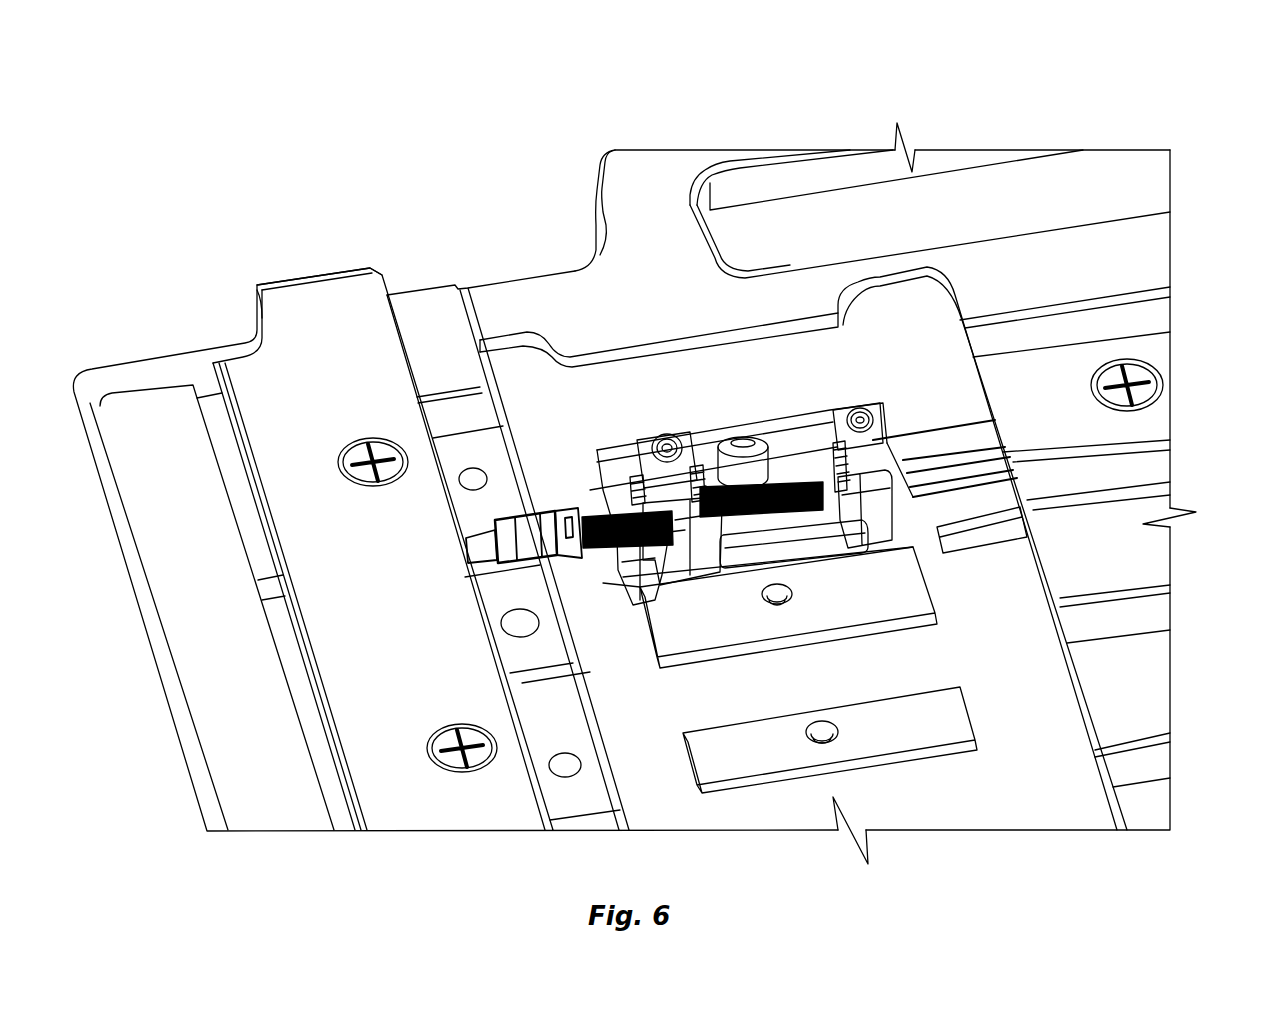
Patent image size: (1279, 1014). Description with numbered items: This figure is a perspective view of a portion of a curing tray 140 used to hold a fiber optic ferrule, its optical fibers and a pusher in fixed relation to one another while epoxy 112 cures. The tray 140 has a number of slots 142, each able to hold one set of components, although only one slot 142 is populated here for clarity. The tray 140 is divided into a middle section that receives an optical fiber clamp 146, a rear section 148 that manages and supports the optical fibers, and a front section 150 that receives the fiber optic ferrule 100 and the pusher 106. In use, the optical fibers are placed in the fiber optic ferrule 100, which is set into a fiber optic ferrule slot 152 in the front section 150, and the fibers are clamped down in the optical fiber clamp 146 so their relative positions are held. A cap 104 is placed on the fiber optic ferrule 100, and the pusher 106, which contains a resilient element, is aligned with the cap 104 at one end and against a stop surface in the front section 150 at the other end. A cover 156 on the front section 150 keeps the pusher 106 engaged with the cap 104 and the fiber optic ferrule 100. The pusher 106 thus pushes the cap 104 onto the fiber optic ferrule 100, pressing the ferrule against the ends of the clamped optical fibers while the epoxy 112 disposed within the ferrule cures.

The fiber optic ferrule 100 is at (557, 510).
The cap 104 is at (500, 520).
The pusher 106 is at (285, 583).
The epoxy 112 is at (598, 548).
The curing tray 140 is at (660, 157).
The slots 142 is at (766, 120).
The optical fiber clamp 146 is at (887, 403).
The rear section 148 is at (1129, 127).
The front section 150 is at (303, 257).
The fiber optic ferrule slot 152 is at (473, 575).
The cover 156 is at (280, 293).